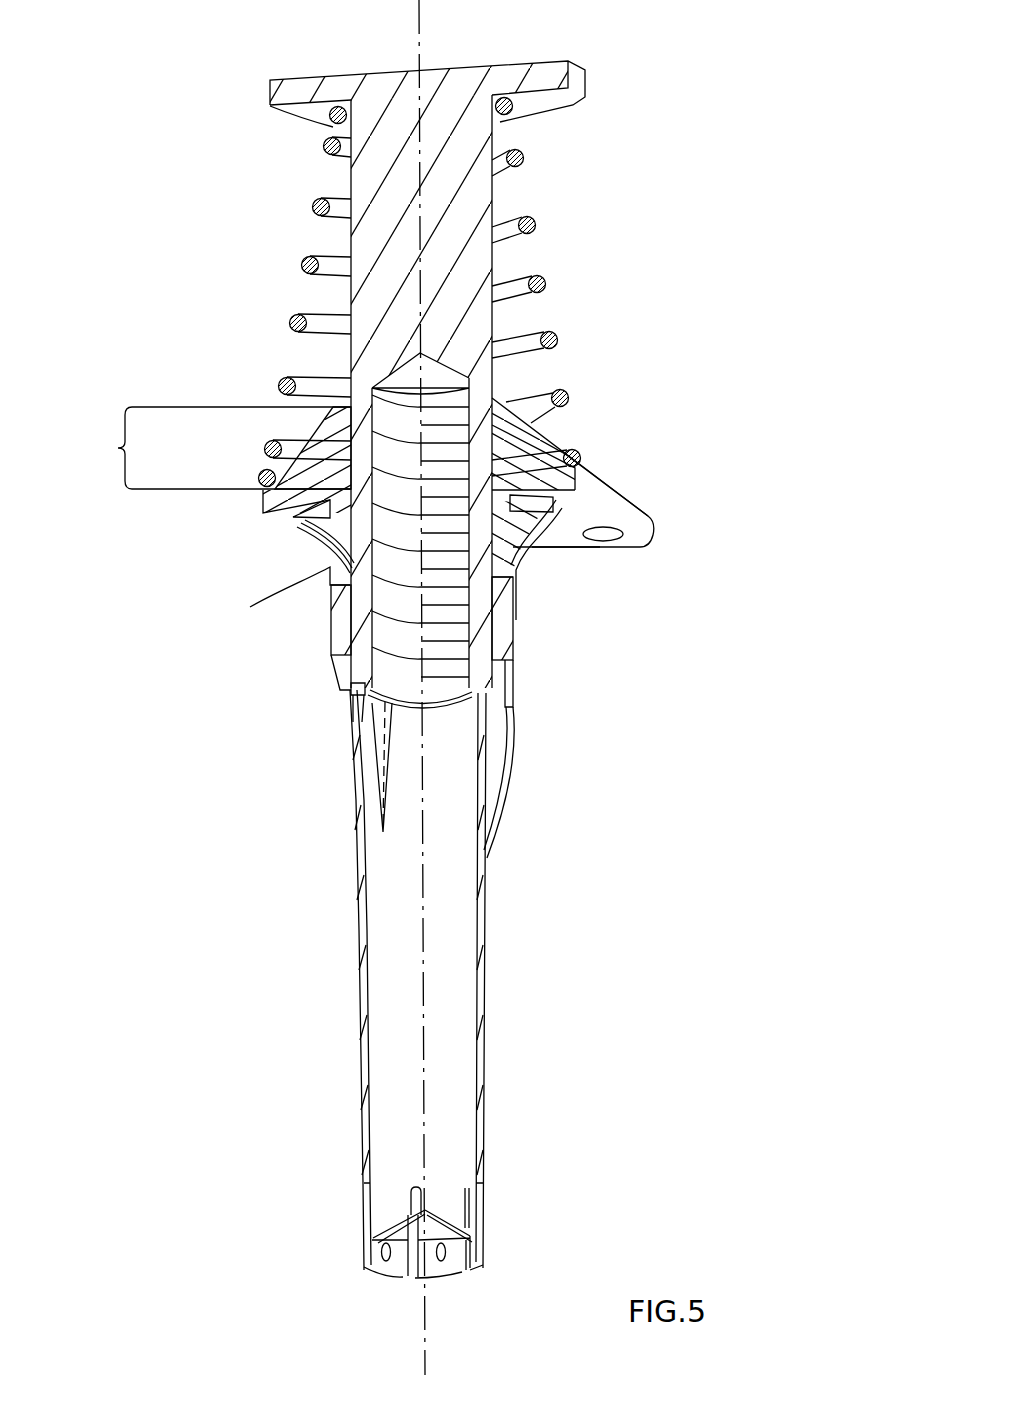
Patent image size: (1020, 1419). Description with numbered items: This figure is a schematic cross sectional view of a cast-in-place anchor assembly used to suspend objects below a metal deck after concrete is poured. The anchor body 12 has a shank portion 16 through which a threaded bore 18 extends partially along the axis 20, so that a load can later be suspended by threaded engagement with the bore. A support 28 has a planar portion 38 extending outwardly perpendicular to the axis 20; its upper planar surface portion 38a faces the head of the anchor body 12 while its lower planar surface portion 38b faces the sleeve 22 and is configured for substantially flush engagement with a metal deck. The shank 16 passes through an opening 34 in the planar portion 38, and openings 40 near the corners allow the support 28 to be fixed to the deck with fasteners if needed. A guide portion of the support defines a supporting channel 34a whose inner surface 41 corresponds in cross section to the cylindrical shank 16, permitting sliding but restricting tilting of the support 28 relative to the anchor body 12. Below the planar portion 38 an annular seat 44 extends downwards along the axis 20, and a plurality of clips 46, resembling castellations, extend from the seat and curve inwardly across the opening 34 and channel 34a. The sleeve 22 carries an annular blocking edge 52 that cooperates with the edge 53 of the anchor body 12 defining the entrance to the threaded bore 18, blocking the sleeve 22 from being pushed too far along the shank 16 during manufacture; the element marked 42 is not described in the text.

The anchor body 12 is at (505, 72).
The shank portion 16 is at (372, 240).
The threaded bore 18 is at (443, 673).
The axis 20 is at (418, 32).
The sleeve 22 is at (483, 952).
The support 28 is at (493, 465).
The opening 34 is at (406, 497).
The supporting channel 34a is at (206, 448).
The planar portion 38 is at (653, 522).
The upper planar surface portion 38a is at (627, 494).
The lower planar surface portion 38b is at (572, 537).
The openings 40 is at (607, 538).
The inner surface 41 is at (492, 468).
The spring retainer 42 is at (506, 398).
The annular seat 44 is at (300, 522).
The clips 46 is at (350, 547).
The annular blocking edge 52 is at (362, 702).
The edge 53 is at (356, 686).